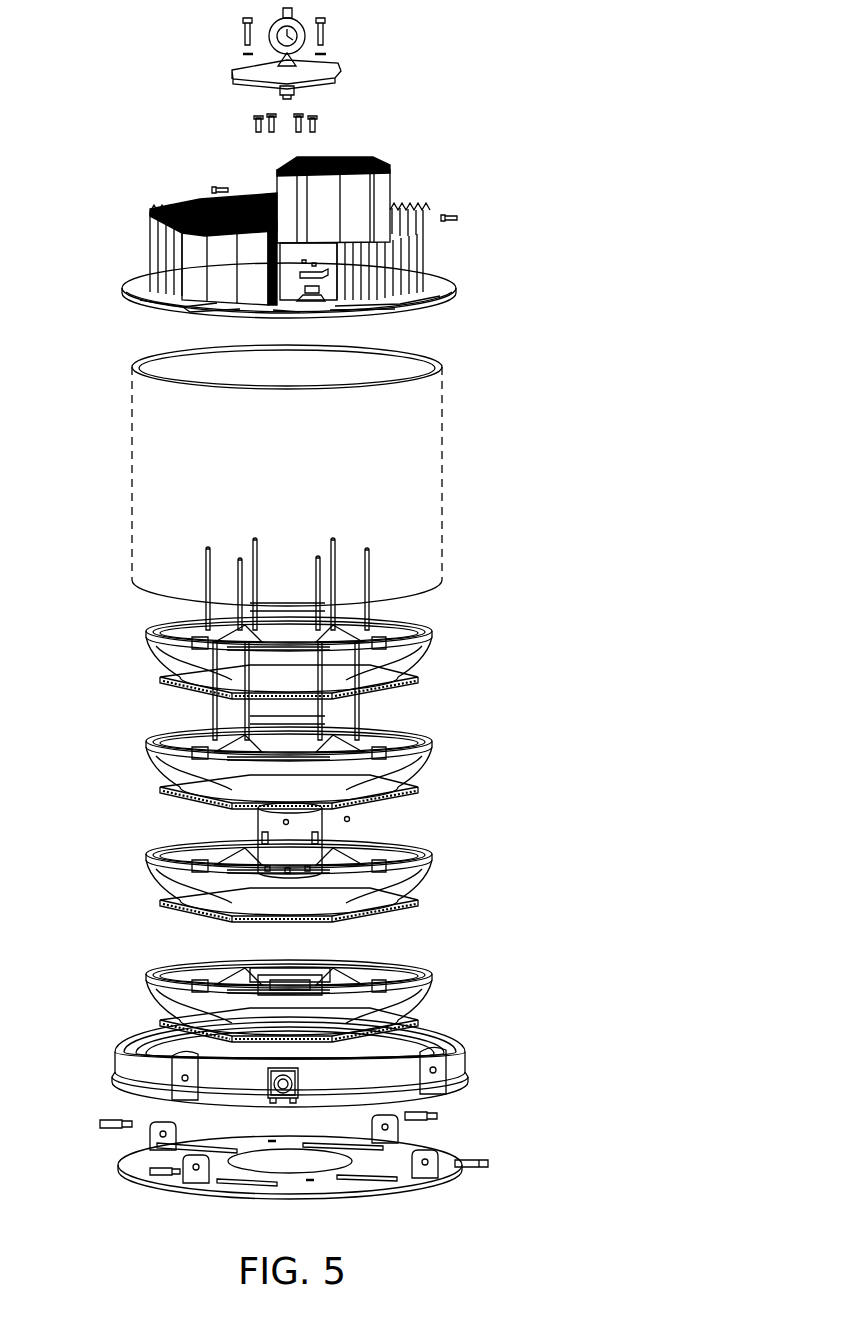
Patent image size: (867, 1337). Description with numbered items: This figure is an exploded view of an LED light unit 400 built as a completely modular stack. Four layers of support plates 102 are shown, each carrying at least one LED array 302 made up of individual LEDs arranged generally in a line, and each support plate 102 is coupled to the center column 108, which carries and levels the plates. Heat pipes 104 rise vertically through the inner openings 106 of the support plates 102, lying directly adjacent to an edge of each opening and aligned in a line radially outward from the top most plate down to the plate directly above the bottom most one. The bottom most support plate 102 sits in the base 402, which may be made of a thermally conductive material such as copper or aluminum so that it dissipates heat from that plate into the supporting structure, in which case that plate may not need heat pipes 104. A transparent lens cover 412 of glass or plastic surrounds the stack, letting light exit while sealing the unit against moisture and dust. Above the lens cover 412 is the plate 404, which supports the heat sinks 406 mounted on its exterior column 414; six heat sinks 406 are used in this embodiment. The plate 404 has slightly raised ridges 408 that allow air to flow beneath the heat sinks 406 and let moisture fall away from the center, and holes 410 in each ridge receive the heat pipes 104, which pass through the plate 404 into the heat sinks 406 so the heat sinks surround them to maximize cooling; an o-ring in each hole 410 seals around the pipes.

The LED light unit 400 is at (546, 53).
The base 402 is at (470, 1062).
The plate 404 is at (137, 302).
The heat sink 406 is at (358, 160).
The ridges 408 is at (440, 286).
The holes 410 is at (303, 297).
The lens cover 412 is at (442, 448).
The exterior column 414 is at (207, 196).
The heat pipe 104 is at (367, 550).
The inner openings 106 is at (283, 633).
The center column 108 is at (350, 820).
The support plate 102 is at (187, 993).
The LED array 302 is at (415, 683).